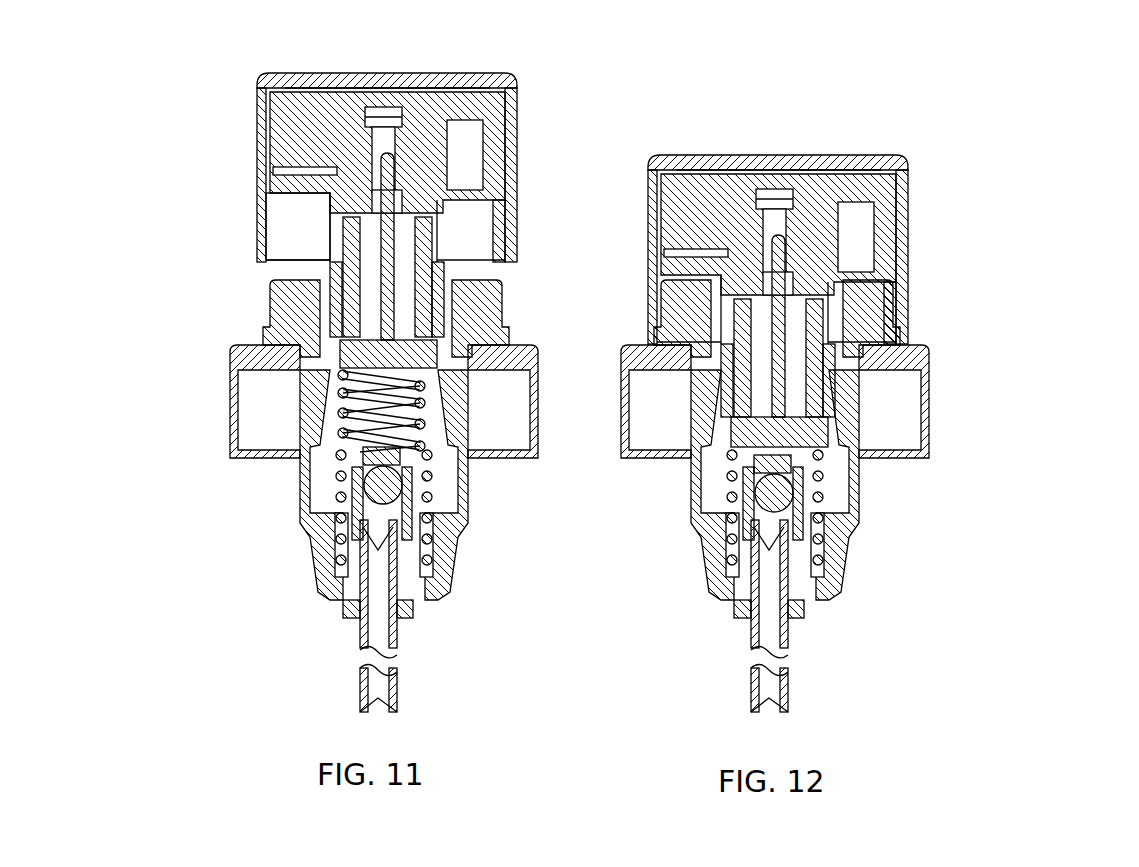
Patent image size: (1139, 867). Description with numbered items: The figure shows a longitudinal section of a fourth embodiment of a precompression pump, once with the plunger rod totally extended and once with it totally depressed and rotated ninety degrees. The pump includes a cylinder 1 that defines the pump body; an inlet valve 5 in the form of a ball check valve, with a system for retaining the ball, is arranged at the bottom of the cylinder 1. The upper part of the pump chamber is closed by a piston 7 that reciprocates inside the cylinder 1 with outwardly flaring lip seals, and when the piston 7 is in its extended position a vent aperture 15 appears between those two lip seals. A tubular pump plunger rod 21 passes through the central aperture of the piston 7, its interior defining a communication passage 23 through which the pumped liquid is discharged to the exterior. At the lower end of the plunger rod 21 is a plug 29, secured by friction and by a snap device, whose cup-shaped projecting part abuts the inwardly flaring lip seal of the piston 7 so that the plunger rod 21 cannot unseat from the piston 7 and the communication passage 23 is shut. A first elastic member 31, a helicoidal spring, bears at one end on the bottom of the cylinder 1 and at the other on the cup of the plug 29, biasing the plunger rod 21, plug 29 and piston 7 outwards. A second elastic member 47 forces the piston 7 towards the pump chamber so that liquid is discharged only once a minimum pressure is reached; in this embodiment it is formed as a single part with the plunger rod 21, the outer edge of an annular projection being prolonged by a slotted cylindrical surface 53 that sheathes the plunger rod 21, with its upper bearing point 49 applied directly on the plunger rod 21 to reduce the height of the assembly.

In FIG. 11, the cylinder 1 is at (457, 490).
In FIG. 11, the inlet valve 5 is at (371, 486).
In FIG. 12, the inlet valve 5 is at (785, 502).
In FIG. 11, the piston 7 is at (330, 383).
In FIG. 12, the piston 7 is at (838, 470).
In FIG. 12, the vent aperture 15 is at (852, 403).
In FIG. 11, the pump plunger rod 21 is at (413, 183).
In FIG. 12, the pump plunger rod 21 is at (803, 257).
In FIG. 11, the communication passage 23 is at (380, 297).
In FIG. 11, the plug 29 is at (343, 253).
In FIG. 12, the plug 29 is at (800, 357).
In FIG. 12, the first elastic member 31 is at (818, 515).
In FIG. 11, the second elastic member 47 is at (332, 291).
In FIG. 12, the second elastic member 47 is at (828, 327).
In FIG. 11, the upper bearing point 49 is at (333, 196).
In FIG. 11, the cylindrical surface 53 is at (437, 257).